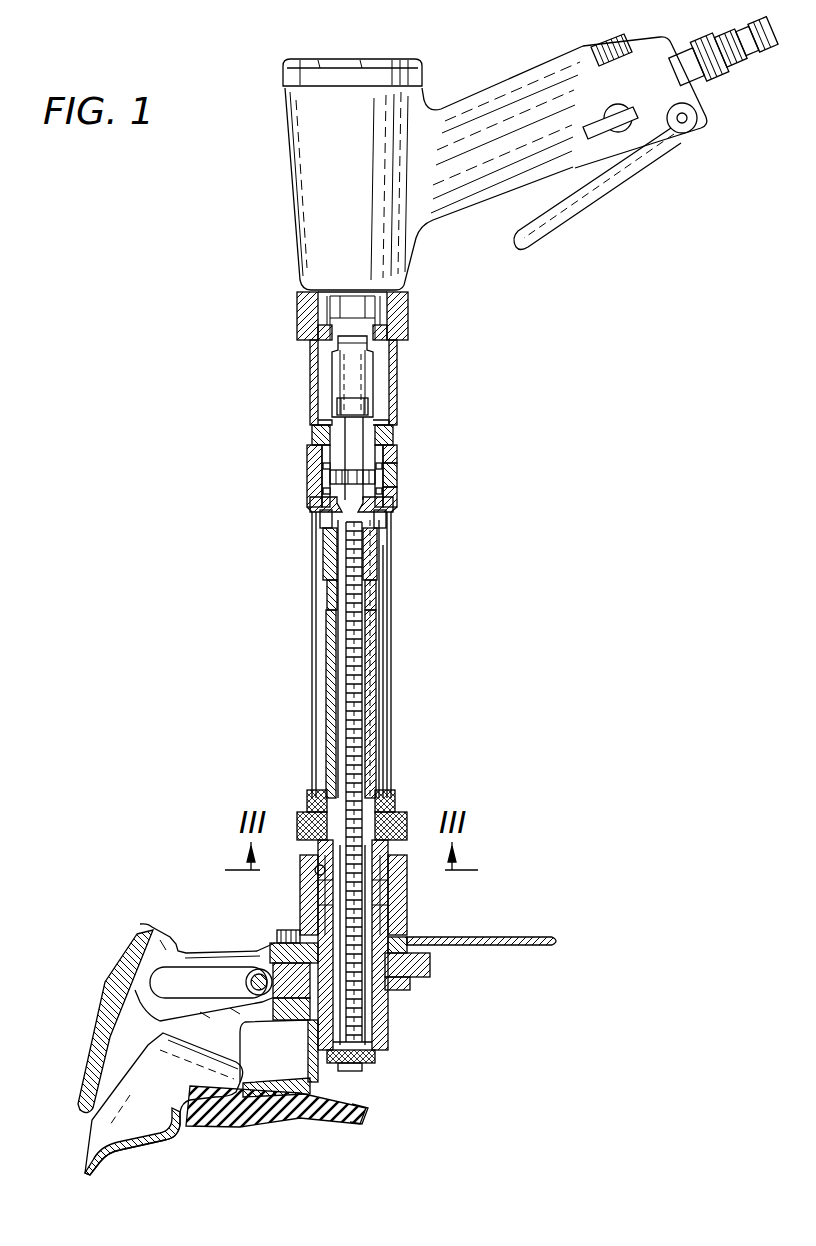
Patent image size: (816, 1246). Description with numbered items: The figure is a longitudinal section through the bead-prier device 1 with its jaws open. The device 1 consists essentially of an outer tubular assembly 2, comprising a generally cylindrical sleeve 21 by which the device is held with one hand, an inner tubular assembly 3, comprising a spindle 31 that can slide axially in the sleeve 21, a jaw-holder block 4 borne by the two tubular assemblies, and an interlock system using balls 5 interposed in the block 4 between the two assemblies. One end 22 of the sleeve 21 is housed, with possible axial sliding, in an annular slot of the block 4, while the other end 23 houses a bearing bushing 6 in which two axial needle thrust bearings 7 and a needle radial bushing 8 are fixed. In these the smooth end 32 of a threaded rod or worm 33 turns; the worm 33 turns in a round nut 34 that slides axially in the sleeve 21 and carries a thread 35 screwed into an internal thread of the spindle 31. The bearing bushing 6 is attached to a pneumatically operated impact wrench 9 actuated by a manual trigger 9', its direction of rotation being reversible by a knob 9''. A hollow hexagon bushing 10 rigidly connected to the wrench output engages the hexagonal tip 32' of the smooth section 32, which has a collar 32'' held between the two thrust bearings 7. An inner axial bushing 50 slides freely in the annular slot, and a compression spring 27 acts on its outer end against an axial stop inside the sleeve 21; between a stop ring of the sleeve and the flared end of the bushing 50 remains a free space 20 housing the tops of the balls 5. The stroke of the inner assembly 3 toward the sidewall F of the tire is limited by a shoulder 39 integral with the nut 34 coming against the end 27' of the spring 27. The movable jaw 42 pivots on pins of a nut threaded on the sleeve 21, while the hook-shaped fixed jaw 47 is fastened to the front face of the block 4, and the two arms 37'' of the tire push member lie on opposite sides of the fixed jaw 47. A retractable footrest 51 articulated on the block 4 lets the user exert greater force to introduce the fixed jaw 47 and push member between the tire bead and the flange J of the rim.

The bead-prier device 1 is at (253, 664).
The outer tubular assembly 2 is at (308, 692).
The inner tubular assembly 3 is at (377, 690).
The jaw-holder block 4 is at (399, 998).
The balls 5 is at (298, 868).
The bearing bushing 6 is at (310, 437).
The axial needle thrust bearings 7 is at (397, 453).
The radial bushing having needles 8 is at (395, 428).
The pneumatically operated impact wrench 9 is at (514, 150).
The manual trigger 9' is at (605, 178).
The knob 9'' is at (603, 107).
The hollow hexagon bushing 10 is at (368, 362).
The free space 20 is at (306, 913).
The sleeve 21 is at (317, 718).
The end of the sleeve 22 is at (295, 887).
The other end of the sleeve 23 is at (303, 451).
The compression spring 27 is at (289, 799).
The end of the spring 27' is at (419, 794).
The spindle 31 is at (373, 720).
The smooth end of the threaded rod 32 is at (309, 484).
The hexagonal tip 32' is at (309, 390).
The collar 32'' is at (436, 472).
The threaded rod or worm 33 is at (343, 577).
The round nut 34 is at (326, 540).
The thread 35 is at (383, 567).
The arms of the tire push member 37'' is at (280, 1047).
The shoulder 39 is at (387, 540).
The movable jaw 42 is at (113, 1083).
The fixed jaw 47 is at (267, 1117).
The inner axial bushing 50 is at (397, 887).
The retractable footrest 51 is at (508, 936).
The sidewall of the tire F is at (360, 1102).
The flange of the rim J is at (240, 1064).